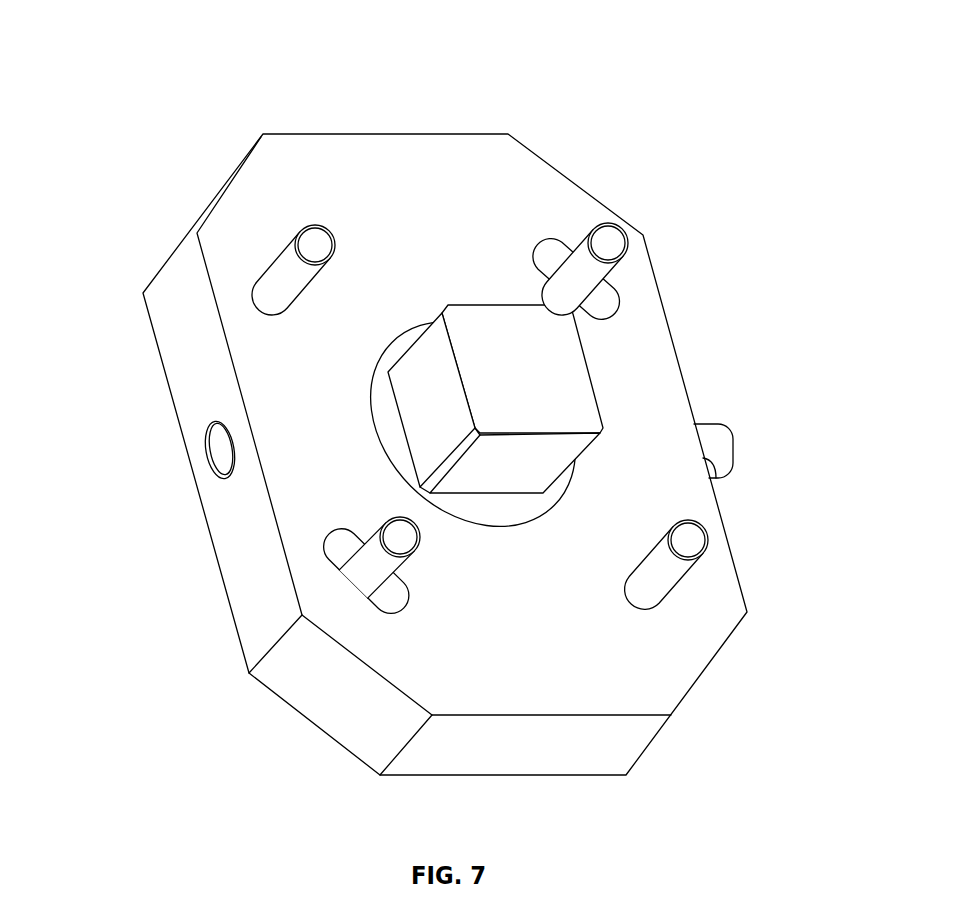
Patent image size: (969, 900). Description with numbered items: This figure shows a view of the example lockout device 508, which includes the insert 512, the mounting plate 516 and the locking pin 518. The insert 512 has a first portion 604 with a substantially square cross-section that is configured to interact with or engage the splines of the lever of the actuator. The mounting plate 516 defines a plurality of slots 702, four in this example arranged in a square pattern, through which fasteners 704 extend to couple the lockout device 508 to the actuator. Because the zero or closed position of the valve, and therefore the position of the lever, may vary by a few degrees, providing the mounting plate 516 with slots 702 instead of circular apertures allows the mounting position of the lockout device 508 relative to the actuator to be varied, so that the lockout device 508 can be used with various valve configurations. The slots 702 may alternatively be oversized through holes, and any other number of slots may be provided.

The lockout device 508 is at (550, 57).
The insert 512 is at (432, 407).
The mounting plate 516 is at (545, 178).
The locking pin 518 is at (717, 447).
The first portion 604 is at (498, 330).
The slots 702 is at (250, 293).
The fasteners 704 is at (283, 260).